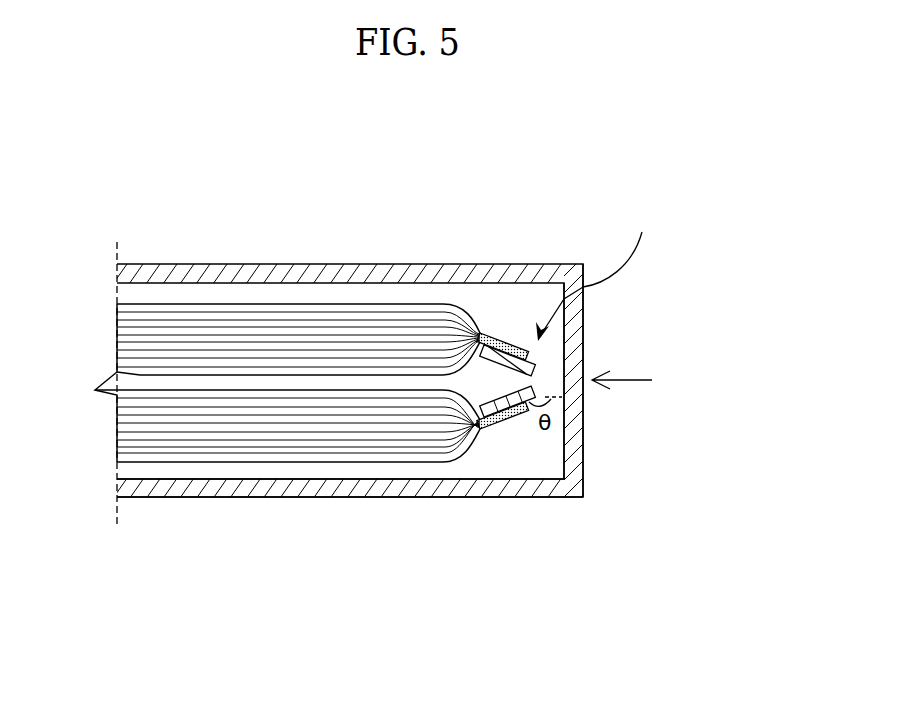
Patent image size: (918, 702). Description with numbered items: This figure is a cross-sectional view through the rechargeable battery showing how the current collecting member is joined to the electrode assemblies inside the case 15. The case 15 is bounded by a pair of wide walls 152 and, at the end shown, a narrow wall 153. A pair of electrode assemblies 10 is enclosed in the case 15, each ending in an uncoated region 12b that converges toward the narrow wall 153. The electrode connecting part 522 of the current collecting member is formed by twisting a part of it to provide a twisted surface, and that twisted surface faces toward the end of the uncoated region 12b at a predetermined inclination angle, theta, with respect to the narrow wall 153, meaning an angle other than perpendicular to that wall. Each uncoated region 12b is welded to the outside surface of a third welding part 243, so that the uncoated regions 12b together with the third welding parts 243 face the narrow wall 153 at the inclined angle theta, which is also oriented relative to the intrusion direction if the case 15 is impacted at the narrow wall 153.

The electrode assembly 10 is at (276, 303).
The uncoated region 12b is at (510, 352).
The case 15 is at (718, 478).
The wide wall 152 is at (525, 497).
The narrow wall 153 is at (583, 457).
The third welding part 243 is at (583, 345).
The electrode connecting part 522 is at (598, 272).